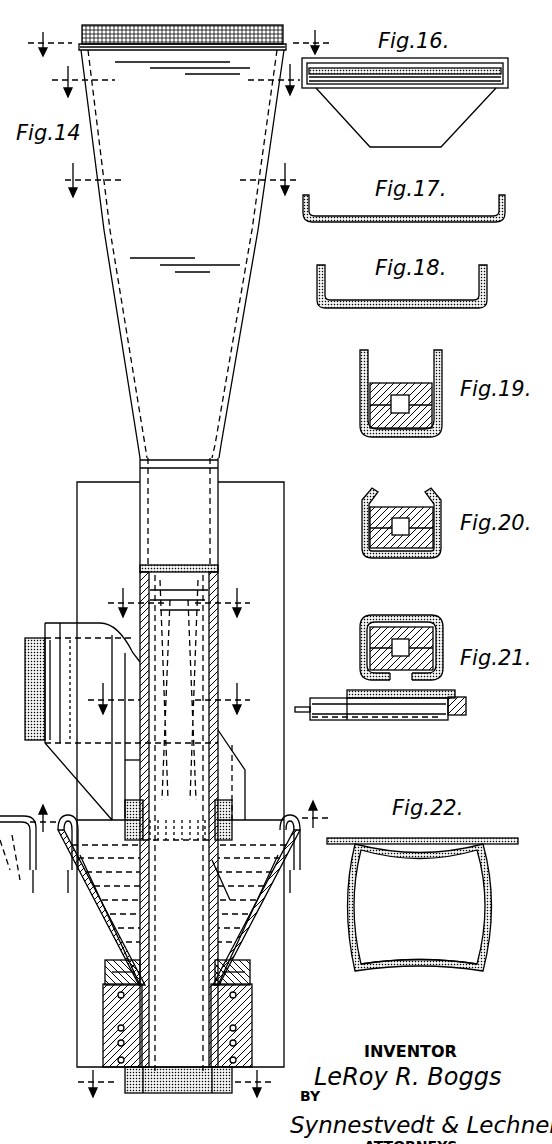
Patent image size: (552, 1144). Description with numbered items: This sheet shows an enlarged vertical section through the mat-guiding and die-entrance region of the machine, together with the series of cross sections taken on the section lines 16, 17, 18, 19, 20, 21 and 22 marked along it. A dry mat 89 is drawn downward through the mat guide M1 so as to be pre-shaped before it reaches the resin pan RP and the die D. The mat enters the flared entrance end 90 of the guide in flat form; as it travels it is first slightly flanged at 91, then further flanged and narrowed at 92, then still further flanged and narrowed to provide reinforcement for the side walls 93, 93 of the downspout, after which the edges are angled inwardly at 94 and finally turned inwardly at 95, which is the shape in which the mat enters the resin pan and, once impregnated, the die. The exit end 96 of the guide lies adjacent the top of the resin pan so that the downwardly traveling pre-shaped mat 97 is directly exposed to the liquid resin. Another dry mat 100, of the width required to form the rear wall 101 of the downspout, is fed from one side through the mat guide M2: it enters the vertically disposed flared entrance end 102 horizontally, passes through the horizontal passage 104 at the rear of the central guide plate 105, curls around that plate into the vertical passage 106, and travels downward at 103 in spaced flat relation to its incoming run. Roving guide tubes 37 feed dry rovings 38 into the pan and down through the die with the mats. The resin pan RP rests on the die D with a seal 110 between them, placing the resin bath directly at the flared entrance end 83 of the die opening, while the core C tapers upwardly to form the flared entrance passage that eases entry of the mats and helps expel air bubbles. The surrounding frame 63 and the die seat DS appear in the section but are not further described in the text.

In FIG. 14, the dry mat 89 is at (80, 27).
In FIG. 14, the flared entrance end 90 is at (295, 36).
In FIG. 16, the flared entrance end 90 is at (478, 70).
In FIG. 17, the slightly flanged portion 91 is at (313, 202).
In FIG. 18, the further flanged portion 92 is at (317, 286).
In FIG. 19, the side walls 93 is at (360, 378).
In FIG. 20, the inwardly angled edges 94 is at (372, 498).
In FIG. 21, the inwardly turned edges 95 is at (364, 675).
In FIG. 14, the exit end 96 is at (222, 805).
In FIG. 14, the pre-shaped mat 97 is at (216, 893).
In FIG. 14, the dry mat 100 is at (40, 635).
In FIG. 21, the dry mat 100 is at (302, 714).
In FIG. 22, the rear wall 101 is at (420, 852).
In FIG. 14, the flared entrance end 102 is at (35, 668).
In FIG. 14, the vertical downward run of mat 103 is at (232, 832).
In FIG. 21, the vertical downward run of mat 103 is at (455, 693).
In FIG. 14, the horizontal passage 104 is at (58, 640).
In FIG. 21, the horizontal passage 104 is at (370, 720).
In FIG. 21, the central guide plate 105 is at (466, 709).
In FIG. 14, the vertical passage 106 is at (125, 758).
In FIG. 21, the vertical passage 106 is at (404, 688).
In FIG. 14, the seal 110 is at (250, 975).
In FIG. 14, the entrance end of die opening 83 is at (128, 984).
In FIG. 14, the housing frame 63 is at (284, 526).
In FIG. 14, the roving guide tubes 37 is at (66, 880).
In FIG. 14, the dry rovings 38 is at (32, 880).
In FIG. 14, the section line 16— 16 is at (181, 41).
In FIG. 14, the section line 17— 17 is at (179, 73).
In FIG. 14, the section line 18— 18 is at (177, 177).
In FIG. 14, the section line 19— 19 is at (179, 596).
In FIG. 14, the section line 20— 20 is at (173, 693).
In FIG. 14, the section line 21— 21 is at (182, 811).
In FIG. 14, the section line 22— 22 is at (176, 1092).
In FIG. 14, the mat guide M1 is at (128, 371).
In FIG. 16, the mat guide M1 is at (500, 94).
In FIG. 14, the mat guide M2 is at (62, 758).
In FIG. 14, the core C is at (180, 945).
In FIG. 19, the core C is at (388, 386).
In FIG. 20, the core C is at (390, 508).
In FIG. 21, the core C is at (388, 628).
In FIG. 14, the die D is at (256, 1028).
In FIG. 14, the die seat DS is at (172, 1094).
In FIG. 22, the die seat DS is at (412, 968).
In FIG. 14, the resin pan RP is at (268, 941).